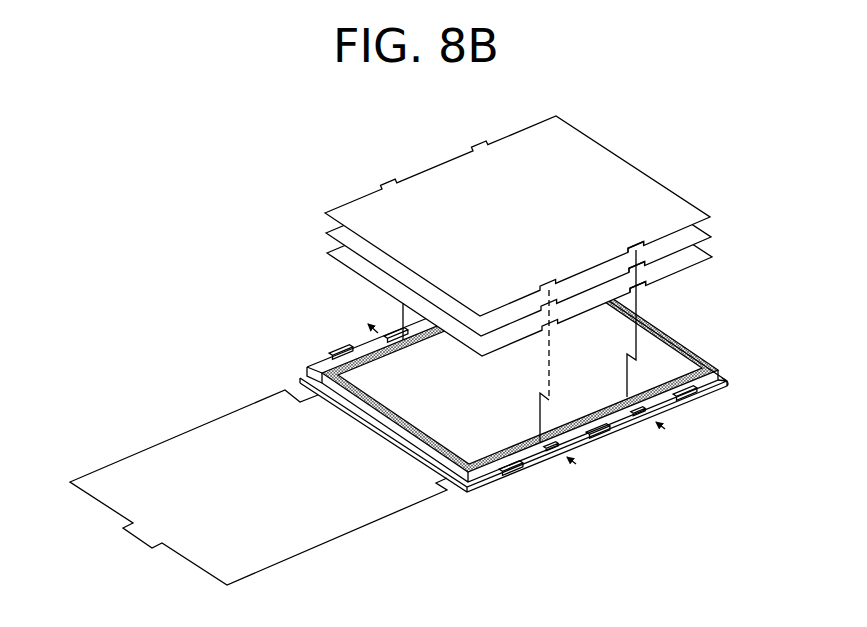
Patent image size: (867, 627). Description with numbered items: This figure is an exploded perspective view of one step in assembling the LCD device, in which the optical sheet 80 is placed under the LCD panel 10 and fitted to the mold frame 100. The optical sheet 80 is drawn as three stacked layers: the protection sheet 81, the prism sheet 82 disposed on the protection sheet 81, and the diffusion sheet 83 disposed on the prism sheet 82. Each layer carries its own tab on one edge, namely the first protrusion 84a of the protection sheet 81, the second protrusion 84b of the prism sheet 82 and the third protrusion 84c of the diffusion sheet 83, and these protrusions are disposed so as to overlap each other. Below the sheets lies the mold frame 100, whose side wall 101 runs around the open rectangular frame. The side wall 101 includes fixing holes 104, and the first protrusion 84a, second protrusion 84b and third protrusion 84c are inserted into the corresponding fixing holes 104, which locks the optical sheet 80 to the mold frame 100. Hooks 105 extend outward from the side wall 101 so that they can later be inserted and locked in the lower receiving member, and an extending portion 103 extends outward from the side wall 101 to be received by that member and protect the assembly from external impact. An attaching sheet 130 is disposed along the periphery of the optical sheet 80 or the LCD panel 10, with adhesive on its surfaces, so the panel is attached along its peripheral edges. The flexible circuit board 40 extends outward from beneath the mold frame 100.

The LCD panel 10 is at (356, 367).
The circuit board 40 is at (188, 438).
The optical sheet 80 is at (570, 251).
The protection sheet 81 is at (553, 271).
The prism sheet 82 is at (553, 248).
The diffusion sheet 83 is at (551, 224).
The first protrusion 84a is at (644, 293).
The second protrusion 84b is at (643, 272).
The third protrusion 84c is at (642, 250).
The mold frame 100 is at (535, 396).
The side wall 101 is at (555, 399).
The extending portion 103 is at (727, 386).
The fixing holes 104 is at (637, 413).
The hooks 105 is at (599, 436).
The attaching sheet 130 is at (312, 366).